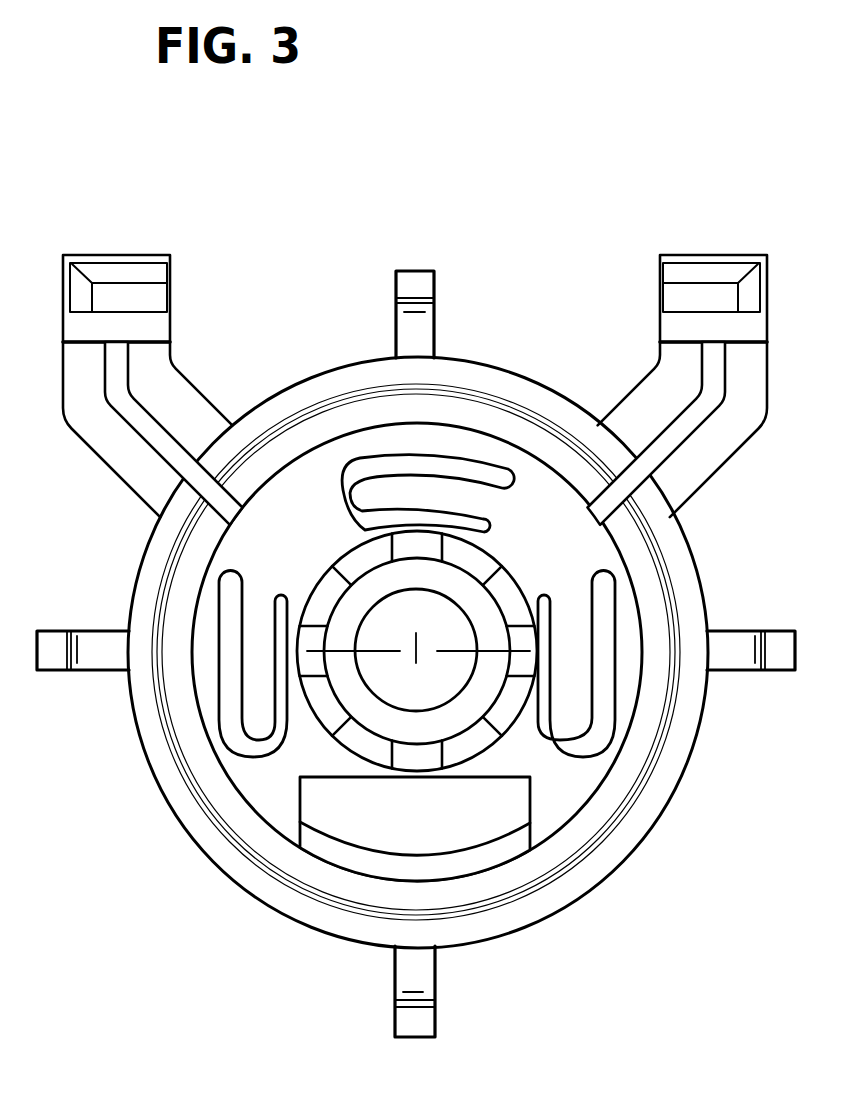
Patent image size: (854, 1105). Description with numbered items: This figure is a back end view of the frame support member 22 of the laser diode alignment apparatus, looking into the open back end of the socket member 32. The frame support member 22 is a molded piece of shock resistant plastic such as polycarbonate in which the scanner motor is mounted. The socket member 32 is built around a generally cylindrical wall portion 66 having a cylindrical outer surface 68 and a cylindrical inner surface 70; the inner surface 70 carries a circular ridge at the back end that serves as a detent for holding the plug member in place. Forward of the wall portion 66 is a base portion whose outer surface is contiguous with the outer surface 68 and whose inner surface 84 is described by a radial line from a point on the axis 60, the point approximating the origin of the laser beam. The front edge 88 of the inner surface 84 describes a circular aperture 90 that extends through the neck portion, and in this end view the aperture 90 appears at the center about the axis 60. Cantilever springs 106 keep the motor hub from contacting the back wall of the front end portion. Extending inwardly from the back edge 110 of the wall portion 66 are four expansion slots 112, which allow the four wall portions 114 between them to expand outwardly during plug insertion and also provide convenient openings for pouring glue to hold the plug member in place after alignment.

The frame support member 22 is at (553, 187).
The socket member 32 is at (517, 748).
The axis 60 is at (414, 652).
The wall portion 66 is at (462, 610).
The outer surface 68 is at (490, 560).
The inner surface 70 is at (474, 706).
The inner surface 84 is at (332, 548).
The front edge 88 is at (314, 612).
The circular aperture 90 is at (418, 712).
The cantilever springs 106 is at (385, 483).
The back edge 110 is at (289, 611).
The expansion slots 112 is at (413, 540).
The wall portions 114 is at (463, 550).